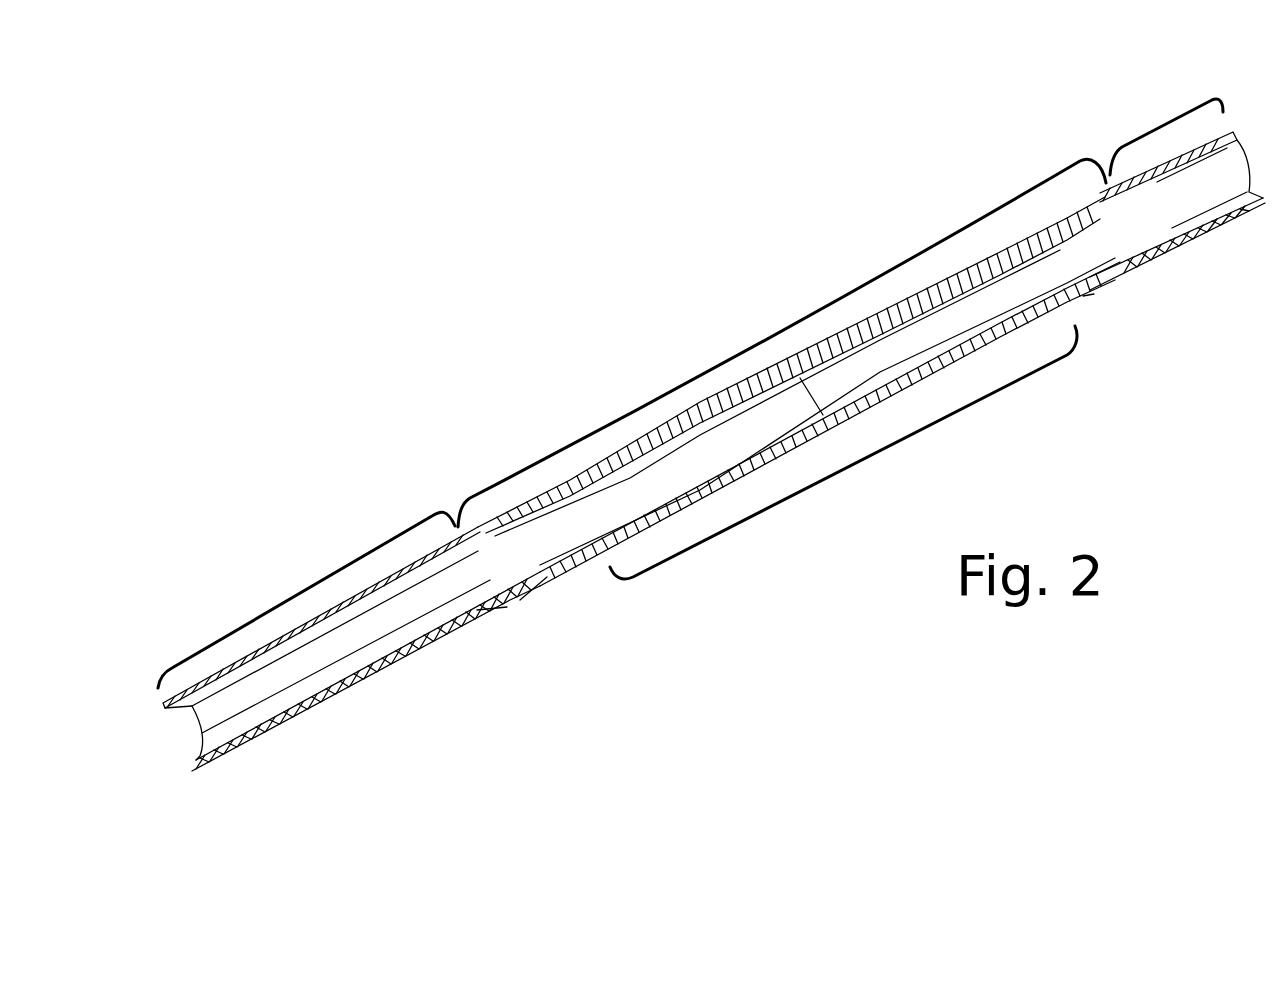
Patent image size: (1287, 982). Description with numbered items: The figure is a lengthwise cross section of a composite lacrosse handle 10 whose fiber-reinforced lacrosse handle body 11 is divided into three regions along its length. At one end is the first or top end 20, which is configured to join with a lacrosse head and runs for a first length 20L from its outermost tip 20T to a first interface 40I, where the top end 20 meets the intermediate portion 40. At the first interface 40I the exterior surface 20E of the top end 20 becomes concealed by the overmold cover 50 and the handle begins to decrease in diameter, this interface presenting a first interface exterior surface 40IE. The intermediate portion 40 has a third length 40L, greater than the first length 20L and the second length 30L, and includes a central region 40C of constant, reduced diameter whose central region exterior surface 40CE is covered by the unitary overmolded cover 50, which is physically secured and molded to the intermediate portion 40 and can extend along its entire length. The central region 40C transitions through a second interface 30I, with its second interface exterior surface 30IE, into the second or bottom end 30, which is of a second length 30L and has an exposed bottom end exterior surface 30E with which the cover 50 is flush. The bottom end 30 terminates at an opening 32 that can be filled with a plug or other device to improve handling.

The composite lacrosse handle 10 is at (505, 318).
The lacrosse handle body 11 is at (182, 707).
The top end 20 is at (250, 652).
The top end exterior surface 20E is at (367, 680).
The first length 20L is at (305, 584).
The outermost tip 20T is at (197, 763).
The bottom end 30 is at (1190, 150).
The bottom end exterior surface 30E is at (1217, 233).
The second interface 30I is at (1120, 253).
The second interface exterior surface 30IE is at (1077, 293).
The second length 30L is at (1152, 128).
The opening 32 is at (1242, 172).
The intermediate portion 40 is at (757, 385).
The central region 40C is at (863, 462).
The central region exterior surface 40CE is at (925, 367).
The first interface 40I is at (507, 607).
The first interface exterior surface 40IE is at (547, 577).
The third length 40L is at (771, 333).
The overmold cover 50 is at (1090, 305).